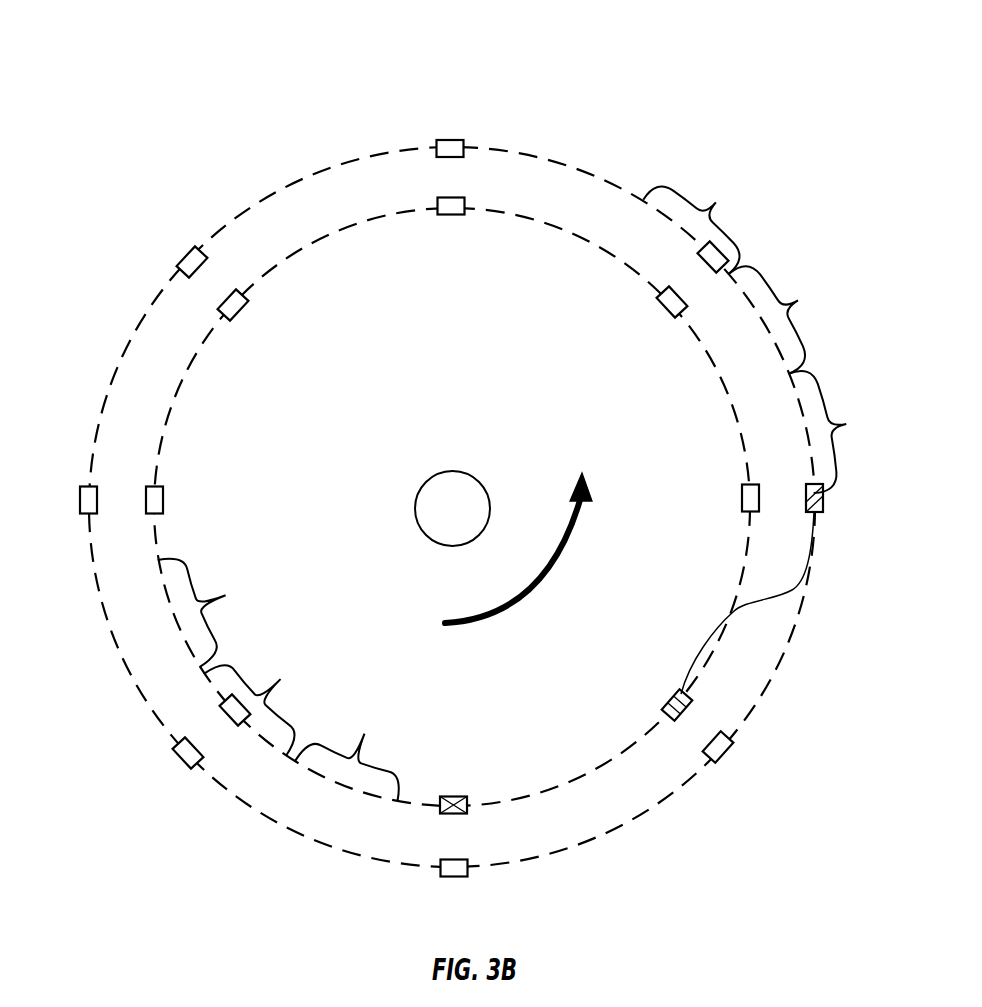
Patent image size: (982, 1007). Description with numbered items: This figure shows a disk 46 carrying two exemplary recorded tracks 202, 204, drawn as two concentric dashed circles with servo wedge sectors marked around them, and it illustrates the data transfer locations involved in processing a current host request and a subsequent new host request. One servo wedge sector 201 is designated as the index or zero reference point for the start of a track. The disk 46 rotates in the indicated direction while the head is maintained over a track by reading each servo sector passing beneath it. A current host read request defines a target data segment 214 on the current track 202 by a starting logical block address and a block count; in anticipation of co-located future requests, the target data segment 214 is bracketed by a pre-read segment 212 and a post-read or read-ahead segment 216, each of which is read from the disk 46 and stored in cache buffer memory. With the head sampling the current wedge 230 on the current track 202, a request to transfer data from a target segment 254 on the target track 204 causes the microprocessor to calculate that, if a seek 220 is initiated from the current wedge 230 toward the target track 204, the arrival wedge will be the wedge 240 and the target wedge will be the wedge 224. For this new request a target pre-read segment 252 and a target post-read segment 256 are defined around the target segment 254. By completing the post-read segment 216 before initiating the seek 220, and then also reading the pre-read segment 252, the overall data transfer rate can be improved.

The disk 46 is at (276, 58).
The servo wedge sector 201 is at (450, 140).
The track 202 is at (114, 388).
The track 204 is at (193, 362).
The pre-read segment 212 is at (700, 221).
The target data segment 214 is at (791, 320).
The post-read segment 216 is at (846, 432).
The seek 220 is at (803, 590).
The target wedge 224 is at (455, 797).
The current wedge 230 is at (812, 484).
The arrival wedge 240 is at (672, 697).
The target pre-read segment 252 is at (347, 754).
The target segment 254 is at (267, 703).
The target post-read segment 256 is at (215, 613).